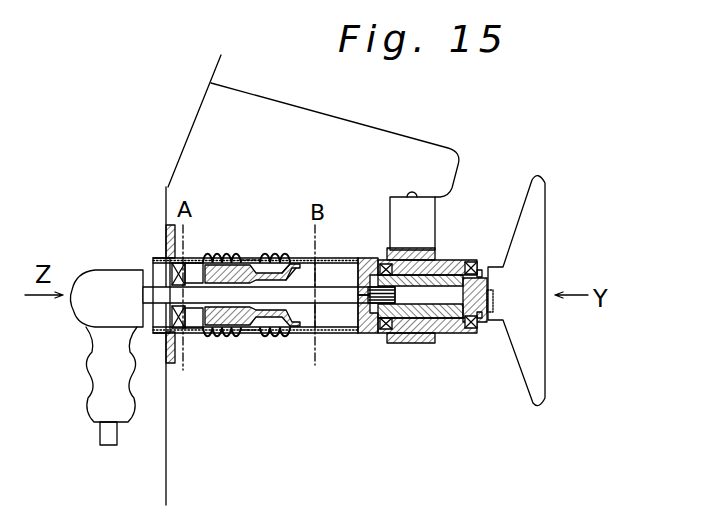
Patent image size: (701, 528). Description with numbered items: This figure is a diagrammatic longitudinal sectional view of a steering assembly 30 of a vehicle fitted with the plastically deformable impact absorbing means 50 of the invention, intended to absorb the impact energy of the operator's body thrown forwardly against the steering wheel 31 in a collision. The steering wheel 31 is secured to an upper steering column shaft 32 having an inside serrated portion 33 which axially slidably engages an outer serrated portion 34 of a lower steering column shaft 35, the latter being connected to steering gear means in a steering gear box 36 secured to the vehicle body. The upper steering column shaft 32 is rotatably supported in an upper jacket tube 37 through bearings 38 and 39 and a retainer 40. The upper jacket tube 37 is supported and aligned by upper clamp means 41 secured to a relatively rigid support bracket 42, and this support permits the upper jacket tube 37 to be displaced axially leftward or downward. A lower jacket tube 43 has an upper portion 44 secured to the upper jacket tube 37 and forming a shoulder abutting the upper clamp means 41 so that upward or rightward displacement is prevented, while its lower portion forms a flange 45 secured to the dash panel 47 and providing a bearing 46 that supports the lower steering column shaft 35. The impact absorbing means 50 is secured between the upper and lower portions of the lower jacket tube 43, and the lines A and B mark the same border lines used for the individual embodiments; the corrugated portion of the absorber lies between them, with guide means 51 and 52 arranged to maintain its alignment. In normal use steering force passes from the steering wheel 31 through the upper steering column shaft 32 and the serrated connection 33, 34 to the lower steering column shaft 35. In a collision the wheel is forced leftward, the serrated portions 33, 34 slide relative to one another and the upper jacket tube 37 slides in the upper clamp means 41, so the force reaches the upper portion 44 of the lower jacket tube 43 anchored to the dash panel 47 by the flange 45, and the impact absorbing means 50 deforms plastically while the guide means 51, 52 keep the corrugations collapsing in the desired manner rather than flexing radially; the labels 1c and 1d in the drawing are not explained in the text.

The steering assembly 30 is at (336, 357).
The steering wheel 31 is at (532, 200).
The upper steering column shaft 32 is at (487, 293).
The inside serrated portion 33 is at (385, 338).
The outer serrated portion 34 is at (358, 250).
The lower steering column shaft 35 is at (147, 277).
The steering gear box 36 is at (96, 313).
The upper jacket tube 37 is at (443, 337).
The bearing 38 is at (477, 267).
The bearing 39 is at (381, 250).
The retainer 40 is at (478, 323).
The upper clamp means 41 is at (437, 210).
The support bracket 42 is at (363, 123).
The lower jacket tube 43 is at (300, 340).
The upper portion 44 is at (358, 340).
The flange 45 is at (173, 367).
The bearing 46 is at (188, 340).
The dash panel 47 is at (170, 457).
The impact absorbing means 50 is at (218, 250).
The guide means 51 is at (270, 250).
The guide means 52 is at (224, 262).
The bearing 1c is at (184, 266).
The stop shoulder 1d is at (281, 263).